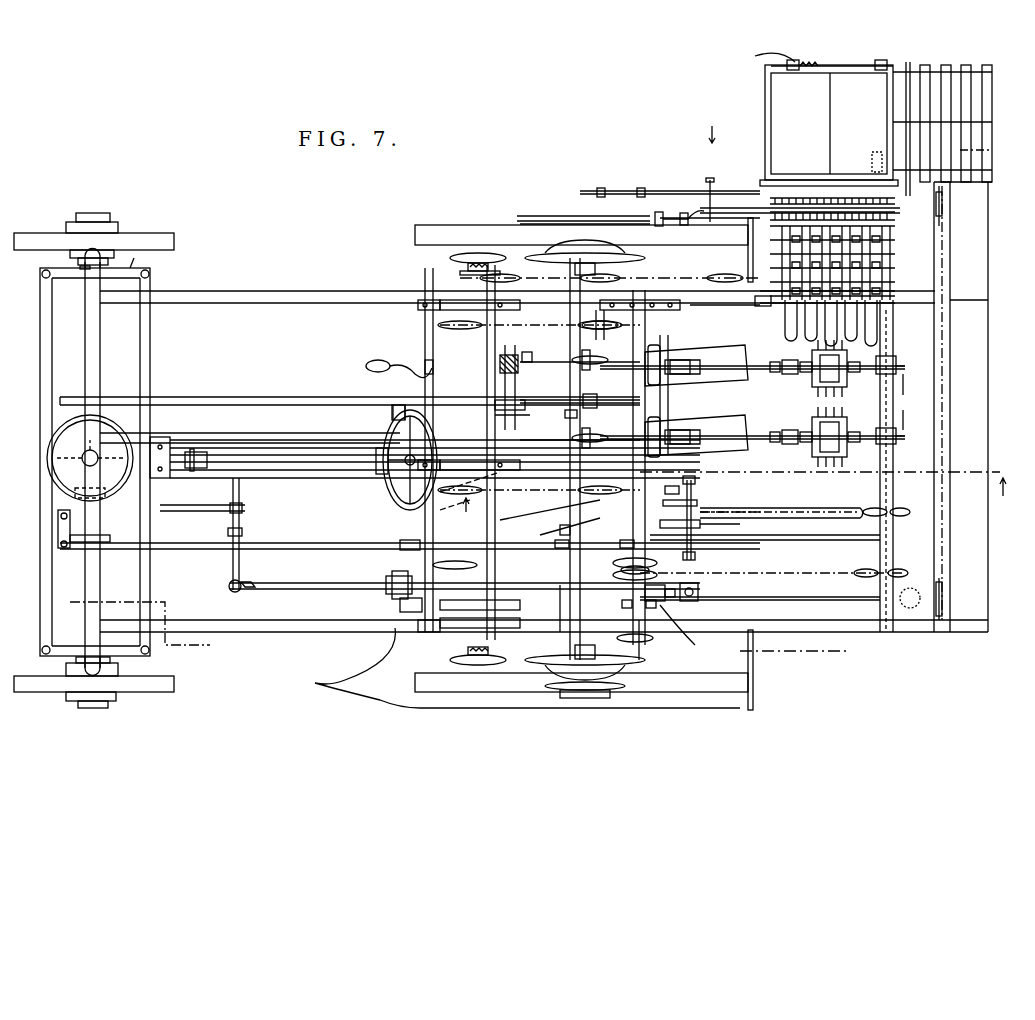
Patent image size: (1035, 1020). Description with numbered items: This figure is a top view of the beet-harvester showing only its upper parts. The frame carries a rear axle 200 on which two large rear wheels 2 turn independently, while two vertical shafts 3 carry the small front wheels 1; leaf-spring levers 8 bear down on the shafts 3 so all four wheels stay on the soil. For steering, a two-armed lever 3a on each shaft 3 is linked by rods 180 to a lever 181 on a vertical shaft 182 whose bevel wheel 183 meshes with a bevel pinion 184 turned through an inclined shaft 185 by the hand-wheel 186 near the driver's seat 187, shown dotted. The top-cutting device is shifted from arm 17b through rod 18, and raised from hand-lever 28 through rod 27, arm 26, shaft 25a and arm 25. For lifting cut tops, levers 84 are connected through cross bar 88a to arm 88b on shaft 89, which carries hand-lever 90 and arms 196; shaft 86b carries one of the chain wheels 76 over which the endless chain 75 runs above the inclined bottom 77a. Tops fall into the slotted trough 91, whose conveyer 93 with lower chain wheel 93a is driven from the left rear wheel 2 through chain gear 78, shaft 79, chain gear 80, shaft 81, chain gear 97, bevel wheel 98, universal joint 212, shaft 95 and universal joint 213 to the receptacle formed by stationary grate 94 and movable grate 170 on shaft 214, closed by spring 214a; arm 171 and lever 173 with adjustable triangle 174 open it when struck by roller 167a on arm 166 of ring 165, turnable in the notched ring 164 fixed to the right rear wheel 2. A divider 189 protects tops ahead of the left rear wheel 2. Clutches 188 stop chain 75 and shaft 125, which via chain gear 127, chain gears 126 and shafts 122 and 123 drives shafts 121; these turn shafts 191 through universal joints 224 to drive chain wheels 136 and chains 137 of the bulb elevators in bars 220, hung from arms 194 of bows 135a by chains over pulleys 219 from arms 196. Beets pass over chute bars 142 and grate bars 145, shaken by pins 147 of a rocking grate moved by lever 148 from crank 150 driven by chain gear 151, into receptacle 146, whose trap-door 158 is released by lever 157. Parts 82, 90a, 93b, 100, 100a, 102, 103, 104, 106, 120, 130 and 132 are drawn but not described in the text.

The front wheel 1 is at (135, 235).
The rear wheel 2 is at (433, 226).
The vertical shaft 3 is at (82, 267).
The two-armed lever 3a is at (136, 455).
The lever or leaf spring 8 is at (85, 286).
The upper arm 17b is at (58, 534).
The rod 18 is at (320, 543).
The arm 25 is at (202, 534).
The shaft 25a is at (243, 534).
The arm 26 is at (248, 584).
The rod 27 is at (312, 589).
The hand-lever 28 is at (388, 578).
The endless chain 75 is at (786, 510).
The chain wheel 76 is at (665, 488).
The inclined bottom 77a is at (766, 541).
The chain gear 78 is at (516, 673).
The shaft 79 is at (480, 602).
The chain gear 80 is at (540, 548).
The shaft 81 is at (630, 580).
The shaft 82 is at (810, 573).
The lever 84 is at (696, 480).
The shaft 86b is at (888, 552).
The cross bar 88a is at (700, 526).
The arm 88b is at (698, 514).
The shaft 89 is at (633, 498).
The hand-lever 90 is at (669, 586).
The clutch member 90a is at (690, 630).
The slotted trough 91 is at (969, 343).
The conveyer 93 is at (943, 338).
The lower chain wheel 93a is at (943, 586).
The guide 93b is at (943, 200).
The stationary bent grate 94 is at (992, 150).
The shaft 95 is at (748, 596).
The chain gear 97 is at (653, 639).
The bevel wheel 98 is at (622, 602).
The frame bar 100 is at (275, 402).
The post 100a is at (102, 400).
The block 102 is at (512, 420).
The shaft 103 is at (525, 387).
The worm 104 is at (500, 370).
The crank 106 is at (366, 371).
The bracket 120 is at (656, 346).
The shaft 121 is at (592, 366).
The shaft 122 is at (555, 430).
The shaft 123 is at (598, 322).
The shaft 125 is at (487, 432).
The chain gear 126 is at (522, 495).
The chain gear 127 is at (513, 258).
The rod 130 is at (668, 402).
The shaft 132 is at (580, 396).
The bow 135a is at (740, 414).
The chain wheel 136 is at (812, 415).
The endless chain 137 is at (805, 444).
The upwardly bent bar 142 is at (870, 310).
The grate bar 145 is at (862, 230).
The receptacle 146 is at (766, 130).
The pin 147 is at (880, 258).
The two-armed lever 148 is at (760, 306).
The crank 150 is at (740, 306).
The chain gear 151 is at (670, 278).
The two-armed lever 157 is at (735, 207).
The trap-door 158 is at (858, 162).
The ring 164 is at (545, 210).
The ring 165 is at (580, 222).
The arm 166 is at (680, 222).
The roller 167a is at (712, 182).
The turnable bent grate 170 is at (965, 90).
The arm 171 is at (905, 99).
The two-armed lever 173 is at (676, 190).
The adjustable triangle 174 is at (605, 190).
The rod 180 is at (40, 341).
The two-armed lever 181 is at (88, 484).
The vertical shaft 182 is at (90, 458).
The bevel wheel 183 is at (150, 438).
The bevel pinion 184 is at (160, 432).
The inclined shaft 185 is at (278, 440).
The hand-wheel 186 is at (388, 430).
The seat 187 is at (520, 512).
The clutch 188 is at (455, 264).
The divider 189 is at (372, 668).
The shaft 191 is at (782, 372).
The arm 194 is at (913, 402).
The arm 196 is at (690, 360).
The rear axle 200 is at (582, 578).
The universal joint 212 is at (688, 601).
The universal joint 213 is at (905, 608).
The shaft 214 is at (836, 66).
The helical spring 214a is at (756, 49).
The guiding pulley 219 is at (897, 366).
The vertical bar 220 is at (861, 405).
The universal joint 224 is at (765, 360).